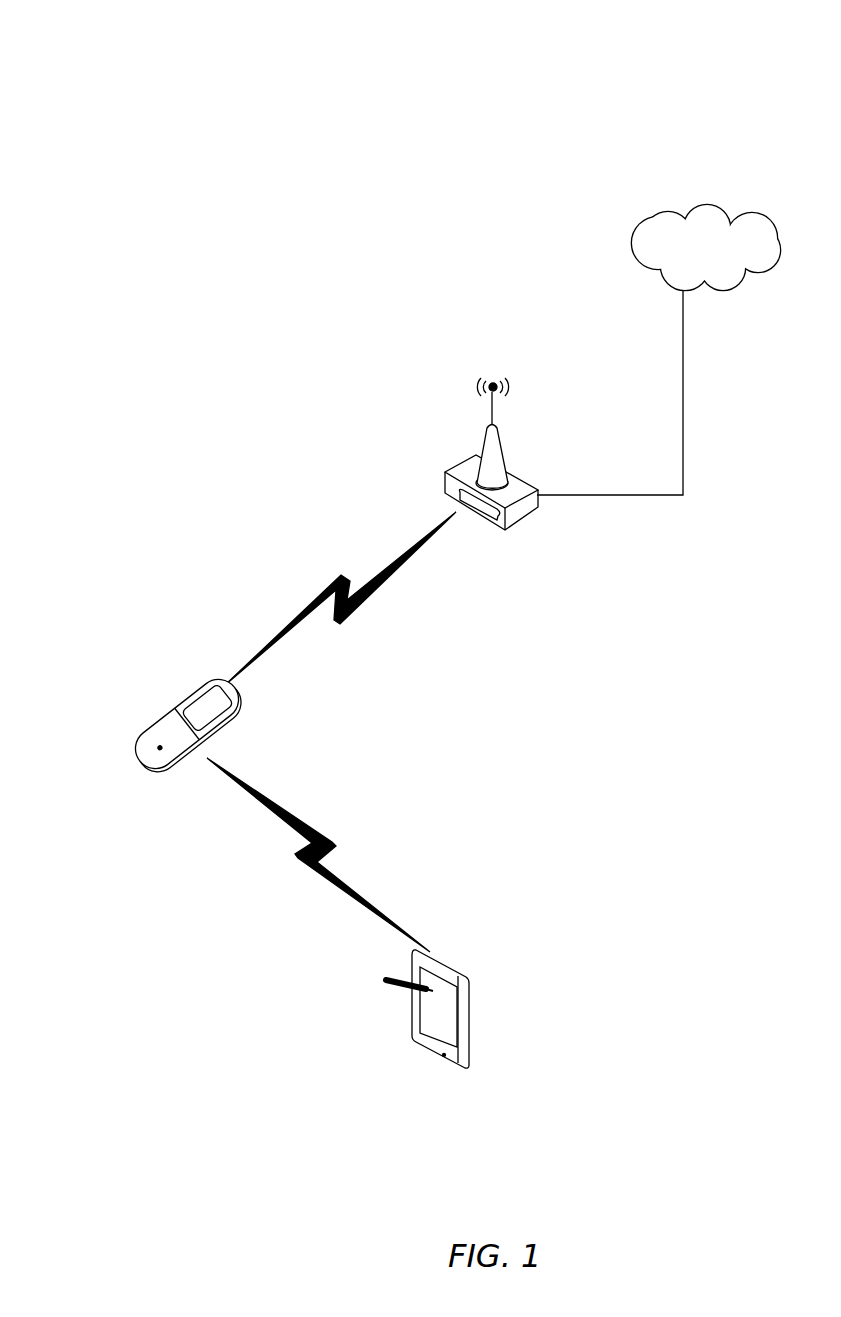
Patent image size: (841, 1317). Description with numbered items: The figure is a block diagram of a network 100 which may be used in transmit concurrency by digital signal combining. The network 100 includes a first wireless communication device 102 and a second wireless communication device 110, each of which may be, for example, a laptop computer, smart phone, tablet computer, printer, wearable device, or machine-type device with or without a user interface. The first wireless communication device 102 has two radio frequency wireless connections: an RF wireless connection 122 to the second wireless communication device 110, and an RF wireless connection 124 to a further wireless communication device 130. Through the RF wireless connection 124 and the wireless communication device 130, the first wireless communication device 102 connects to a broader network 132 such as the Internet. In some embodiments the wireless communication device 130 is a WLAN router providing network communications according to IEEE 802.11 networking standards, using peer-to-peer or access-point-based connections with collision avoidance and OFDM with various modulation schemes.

The network 100 is at (116, 74).
The first wireless communication device 102 is at (170, 708).
The second wireless communication device 110 is at (463, 951).
The RF wireless connection 122 is at (342, 845).
The RF wireless connection 124 is at (300, 582).
The wireless communication device 130 is at (433, 467).
The broader network 132 is at (640, 217).